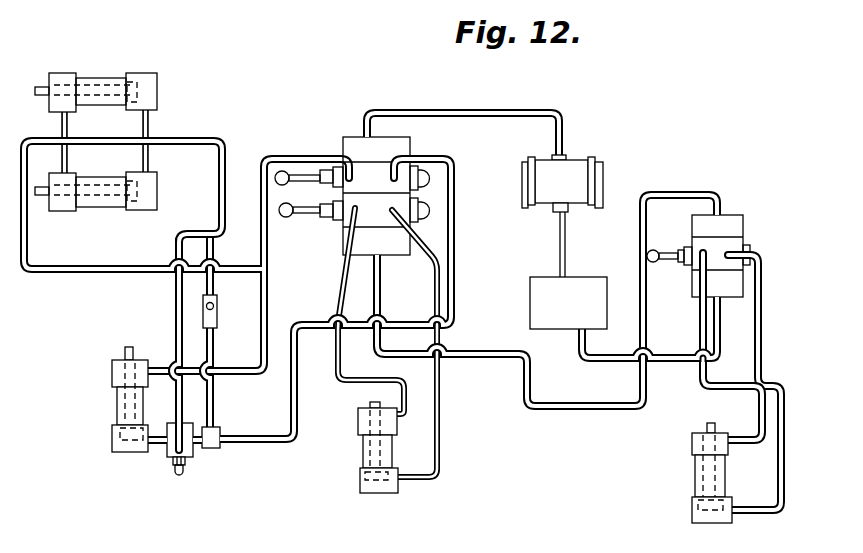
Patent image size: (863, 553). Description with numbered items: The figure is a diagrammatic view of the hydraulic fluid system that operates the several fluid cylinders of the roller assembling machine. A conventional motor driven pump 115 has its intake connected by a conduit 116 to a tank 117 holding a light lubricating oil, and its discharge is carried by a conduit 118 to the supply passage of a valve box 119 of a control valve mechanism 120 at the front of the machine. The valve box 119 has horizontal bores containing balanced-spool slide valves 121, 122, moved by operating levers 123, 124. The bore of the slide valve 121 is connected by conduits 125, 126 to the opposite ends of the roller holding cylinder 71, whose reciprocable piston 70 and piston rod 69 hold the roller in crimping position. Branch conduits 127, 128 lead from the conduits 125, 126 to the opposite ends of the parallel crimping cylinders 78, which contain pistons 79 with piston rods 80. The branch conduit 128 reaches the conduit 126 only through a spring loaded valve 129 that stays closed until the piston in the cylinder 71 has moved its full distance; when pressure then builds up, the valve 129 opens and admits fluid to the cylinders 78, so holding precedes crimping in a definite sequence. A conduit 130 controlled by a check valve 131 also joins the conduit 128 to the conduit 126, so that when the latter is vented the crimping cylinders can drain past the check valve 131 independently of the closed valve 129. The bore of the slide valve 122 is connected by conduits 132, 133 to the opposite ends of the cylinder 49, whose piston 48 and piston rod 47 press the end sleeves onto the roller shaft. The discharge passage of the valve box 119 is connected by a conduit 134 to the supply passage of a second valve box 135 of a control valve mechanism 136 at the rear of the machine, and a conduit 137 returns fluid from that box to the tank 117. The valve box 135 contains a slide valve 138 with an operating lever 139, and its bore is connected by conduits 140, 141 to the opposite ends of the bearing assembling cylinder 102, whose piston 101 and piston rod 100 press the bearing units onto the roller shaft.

The piston rod 47 is at (367, 405).
The reciprocable piston 48 is at (359, 482).
The horizontal fluid cylinder 49 is at (363, 460).
The piston rod 69 is at (125, 352).
The reciprocable piston 70 is at (113, 444).
The horizontal fluid cylinder 71 is at (116, 406).
The horizontal fluid cylinders 78 is at (102, 173).
The reciprocable pistons 79 is at (143, 74).
The piston rods 80 is at (42, 95).
The piston rod 100 is at (706, 426).
The reciprocable piston 101 is at (691, 521).
The horizontal fluid cylinder 102 is at (696, 479).
The motor driven pump 115 is at (579, 162).
The conduit 116 is at (559, 240).
The tank 117 is at (586, 278).
The conduit 118 is at (517, 110).
The valve box 119 is at (360, 135).
The control valve mechanism 120 is at (414, 192).
The slide valve 121 is at (339, 167).
The slide valve 122 is at (342, 219).
The operating lever 123 is at (294, 175).
The operating lever 124 is at (316, 213).
The conduit 125 is at (260, 250).
The conduit 126 is at (291, 406).
The branch conduit 127 is at (107, 269).
The branch conduit 128 is at (176, 324).
The spring loaded valve 129 is at (186, 456).
The conduit 130 is at (212, 352).
The check valve 131 is at (218, 305).
The conduit 132 is at (336, 281).
The conduit 133 is at (432, 278).
The conduit 134 is at (550, 410).
The valve box 135 is at (738, 213).
The control valve mechanism 136 is at (744, 228).
The conduit 137 is at (719, 346).
The slide valve 138 is at (685, 268).
The operating lever 139 is at (659, 250).
The conduit 140 is at (699, 334).
The conduit 141 is at (763, 329).